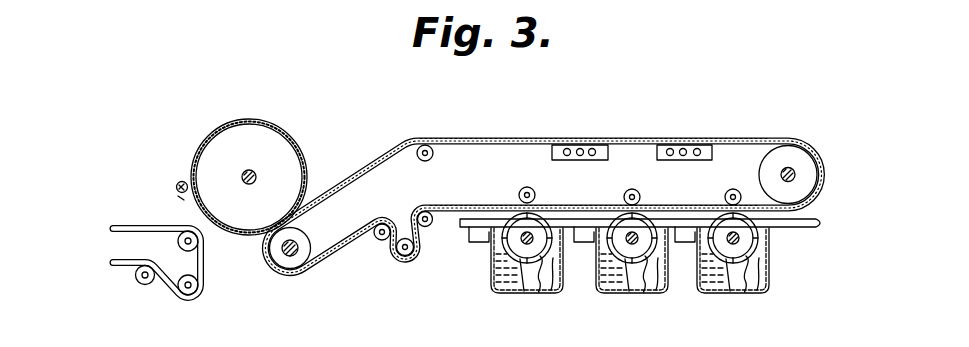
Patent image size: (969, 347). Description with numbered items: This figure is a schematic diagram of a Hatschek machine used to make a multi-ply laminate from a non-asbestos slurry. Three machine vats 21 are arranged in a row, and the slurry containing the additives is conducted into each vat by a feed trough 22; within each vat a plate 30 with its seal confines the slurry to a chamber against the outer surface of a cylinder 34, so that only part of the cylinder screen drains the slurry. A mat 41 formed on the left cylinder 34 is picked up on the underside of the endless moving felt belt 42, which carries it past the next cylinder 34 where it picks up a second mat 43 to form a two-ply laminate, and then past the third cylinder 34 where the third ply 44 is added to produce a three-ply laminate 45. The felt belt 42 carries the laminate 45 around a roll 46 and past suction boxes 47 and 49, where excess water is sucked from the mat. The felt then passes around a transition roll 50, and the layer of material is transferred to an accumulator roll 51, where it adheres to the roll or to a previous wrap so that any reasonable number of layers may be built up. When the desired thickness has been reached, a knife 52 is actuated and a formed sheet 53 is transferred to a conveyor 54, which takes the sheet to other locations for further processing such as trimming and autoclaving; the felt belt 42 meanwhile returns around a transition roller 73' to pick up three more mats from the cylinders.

The machine vat 21 is at (492, 282).
The feed trough 22 is at (781, 232).
The plate 30 is at (500, 294).
The cylinder 34 is at (545, 293).
The mat 41 is at (515, 216).
The felt belt 42 is at (342, 256).
The mat 43 is at (610, 214).
The third ply 44 is at (711, 214).
The three-ply laminate 45 is at (513, 134).
The roll 46 is at (770, 166).
The suction box 47 is at (657, 152).
The suction box 49 is at (552, 150).
The transition roll 50 is at (425, 161).
The accumulator roll 51 is at (267, 134).
The knife 52 is at (178, 188).
The formed sheet 53 is at (220, 128).
The conveyor 54 is at (146, 224).
The roller 73' is at (310, 238).